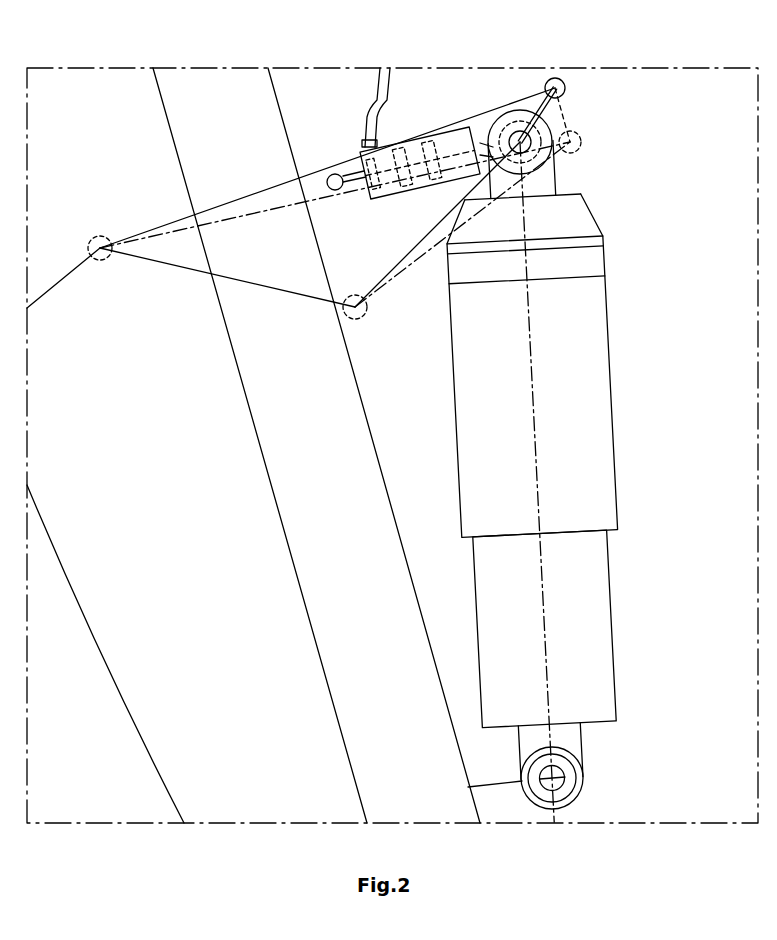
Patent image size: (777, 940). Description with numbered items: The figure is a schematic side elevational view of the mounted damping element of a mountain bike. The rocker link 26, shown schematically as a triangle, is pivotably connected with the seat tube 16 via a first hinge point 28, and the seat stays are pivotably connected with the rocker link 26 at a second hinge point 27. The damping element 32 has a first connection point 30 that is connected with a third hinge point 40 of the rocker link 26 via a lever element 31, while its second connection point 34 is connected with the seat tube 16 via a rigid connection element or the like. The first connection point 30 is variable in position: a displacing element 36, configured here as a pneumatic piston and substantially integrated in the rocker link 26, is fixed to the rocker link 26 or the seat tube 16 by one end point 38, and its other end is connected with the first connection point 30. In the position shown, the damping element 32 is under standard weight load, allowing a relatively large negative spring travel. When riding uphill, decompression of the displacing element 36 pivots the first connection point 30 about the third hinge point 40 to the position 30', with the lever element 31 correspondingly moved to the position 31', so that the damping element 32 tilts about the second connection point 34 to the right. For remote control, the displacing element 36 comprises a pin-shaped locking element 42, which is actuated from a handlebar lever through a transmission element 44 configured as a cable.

The seat tube 16 is at (279, 392).
The rocker link 26 is at (172, 248).
The second hinge point 27 is at (102, 260).
The first hinge point 28 is at (369, 311).
The first connection point 30 is at (514, 94).
The displaced position of first connection point 30' is at (601, 126).
The lever element 31 is at (569, 83).
The displaced position of lever element 31' is at (613, 90).
The damping element 32 is at (578, 382).
The second connection point 34 is at (584, 785).
The displacing element 36 is at (380, 213).
The end point 38 is at (326, 179).
The third hinge point 40 is at (557, 78).
The locking element 42 is at (343, 157).
The transmission element 44 is at (377, 97).